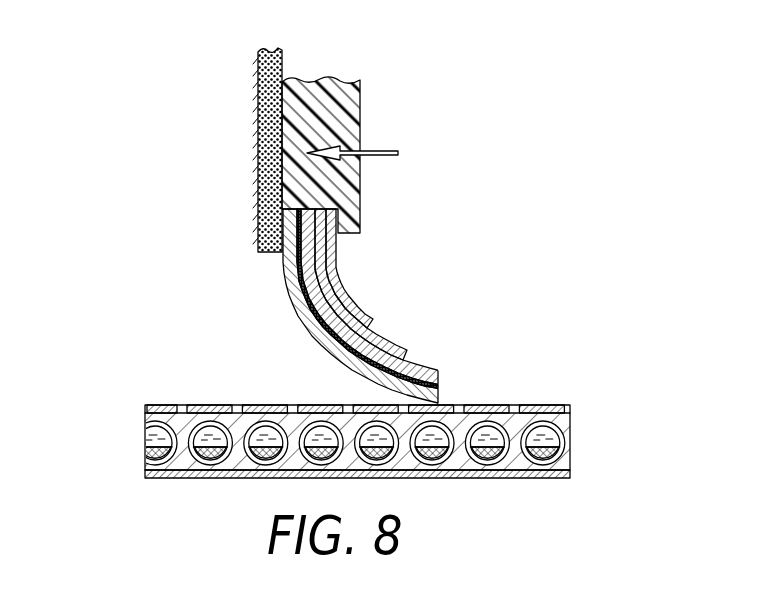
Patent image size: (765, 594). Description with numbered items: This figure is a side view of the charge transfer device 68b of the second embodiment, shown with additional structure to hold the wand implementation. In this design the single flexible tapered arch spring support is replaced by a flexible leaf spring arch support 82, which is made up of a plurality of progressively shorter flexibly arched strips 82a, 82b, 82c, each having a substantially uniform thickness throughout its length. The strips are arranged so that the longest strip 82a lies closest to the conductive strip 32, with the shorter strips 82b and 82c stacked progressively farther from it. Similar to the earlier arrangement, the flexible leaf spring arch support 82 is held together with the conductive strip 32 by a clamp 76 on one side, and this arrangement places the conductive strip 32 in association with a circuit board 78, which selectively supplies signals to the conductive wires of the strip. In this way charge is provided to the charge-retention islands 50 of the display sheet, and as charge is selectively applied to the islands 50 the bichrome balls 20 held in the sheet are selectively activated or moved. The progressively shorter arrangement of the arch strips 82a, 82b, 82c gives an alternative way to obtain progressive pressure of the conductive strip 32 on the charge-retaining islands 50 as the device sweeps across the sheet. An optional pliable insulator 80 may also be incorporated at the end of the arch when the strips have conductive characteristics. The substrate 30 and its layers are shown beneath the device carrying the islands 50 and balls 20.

The circuit board 78 is at (285, 63).
The clamp 76 is at (363, 127).
The charge transfer device 68b is at (389, 268).
The flexible leaf spring arch support 82 is at (399, 297).
The flexible arch support strip 82a is at (420, 375).
The flexible arch support strip 82b is at (402, 347).
The flexible arch support strip 82c is at (370, 268).
The pliable insulator 80 is at (440, 387).
The conductive strip 32 is at (296, 316).
The substrate 30 is at (331, 405).
The bichrome balls 20 is at (146, 438).
The charge-retention islands 50 is at (322, 405).